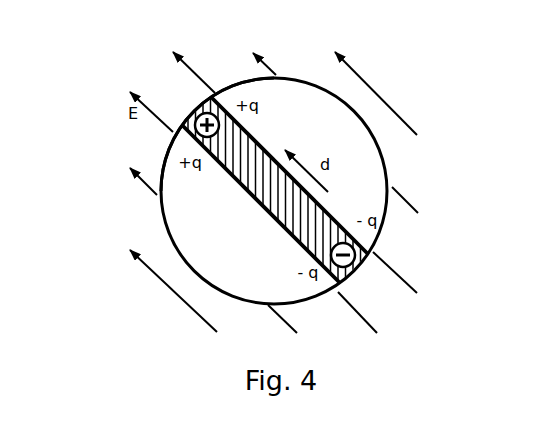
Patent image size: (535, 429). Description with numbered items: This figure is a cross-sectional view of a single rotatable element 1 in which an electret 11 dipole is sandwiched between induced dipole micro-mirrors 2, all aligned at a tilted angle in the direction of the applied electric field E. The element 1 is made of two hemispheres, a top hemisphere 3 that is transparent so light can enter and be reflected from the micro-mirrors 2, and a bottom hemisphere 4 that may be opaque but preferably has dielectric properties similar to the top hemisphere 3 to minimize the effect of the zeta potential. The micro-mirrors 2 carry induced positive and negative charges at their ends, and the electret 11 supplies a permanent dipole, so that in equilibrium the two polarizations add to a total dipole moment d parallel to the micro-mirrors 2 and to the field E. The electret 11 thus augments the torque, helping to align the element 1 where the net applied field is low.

The rotatable element 1 is at (222, 262).
The induced dipole micro-mirror 2 is at (250, 135).
The top hemisphere 3 is at (365, 131).
The bottom hemisphere 4 is at (175, 220).
The electret 11 is at (290, 207).